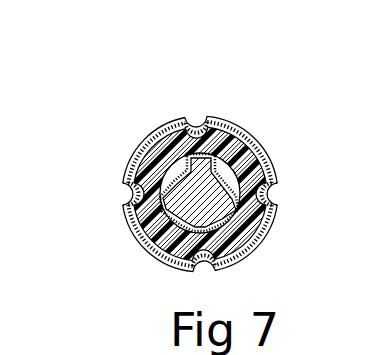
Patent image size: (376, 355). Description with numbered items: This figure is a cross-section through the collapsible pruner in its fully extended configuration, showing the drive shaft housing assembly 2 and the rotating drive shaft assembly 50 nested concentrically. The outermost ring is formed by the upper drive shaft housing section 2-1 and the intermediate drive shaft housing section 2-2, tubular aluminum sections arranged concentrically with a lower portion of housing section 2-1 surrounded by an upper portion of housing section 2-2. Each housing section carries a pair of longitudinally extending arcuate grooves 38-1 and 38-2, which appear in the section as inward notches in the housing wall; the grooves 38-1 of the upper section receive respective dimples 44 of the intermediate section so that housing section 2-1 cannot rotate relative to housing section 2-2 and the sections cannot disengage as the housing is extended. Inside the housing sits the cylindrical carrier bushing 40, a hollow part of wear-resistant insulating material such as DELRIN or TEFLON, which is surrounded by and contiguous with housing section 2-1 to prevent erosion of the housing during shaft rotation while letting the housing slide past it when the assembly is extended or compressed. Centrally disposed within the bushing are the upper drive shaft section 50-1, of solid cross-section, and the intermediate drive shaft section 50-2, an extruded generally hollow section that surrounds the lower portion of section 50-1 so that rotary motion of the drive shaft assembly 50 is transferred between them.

The drive shaft housing assembly 2 is at (165, 108).
The upper drive shaft housing section 2-1 is at (144, 249).
The intermediate drive shaft housing section 2-2 is at (126, 214).
The arcuate grooves 38-1 is at (126, 187).
The arcuate grooves 38-2 is at (204, 116).
The carrier bushing 40 is at (262, 238).
The dimples 44 is at (126, 197).
The drive shaft assembly 50 is at (248, 131).
The upper drive shaft section 50-1 is at (256, 161).
The intermediate drive shaft section 50-2 is at (144, 144).